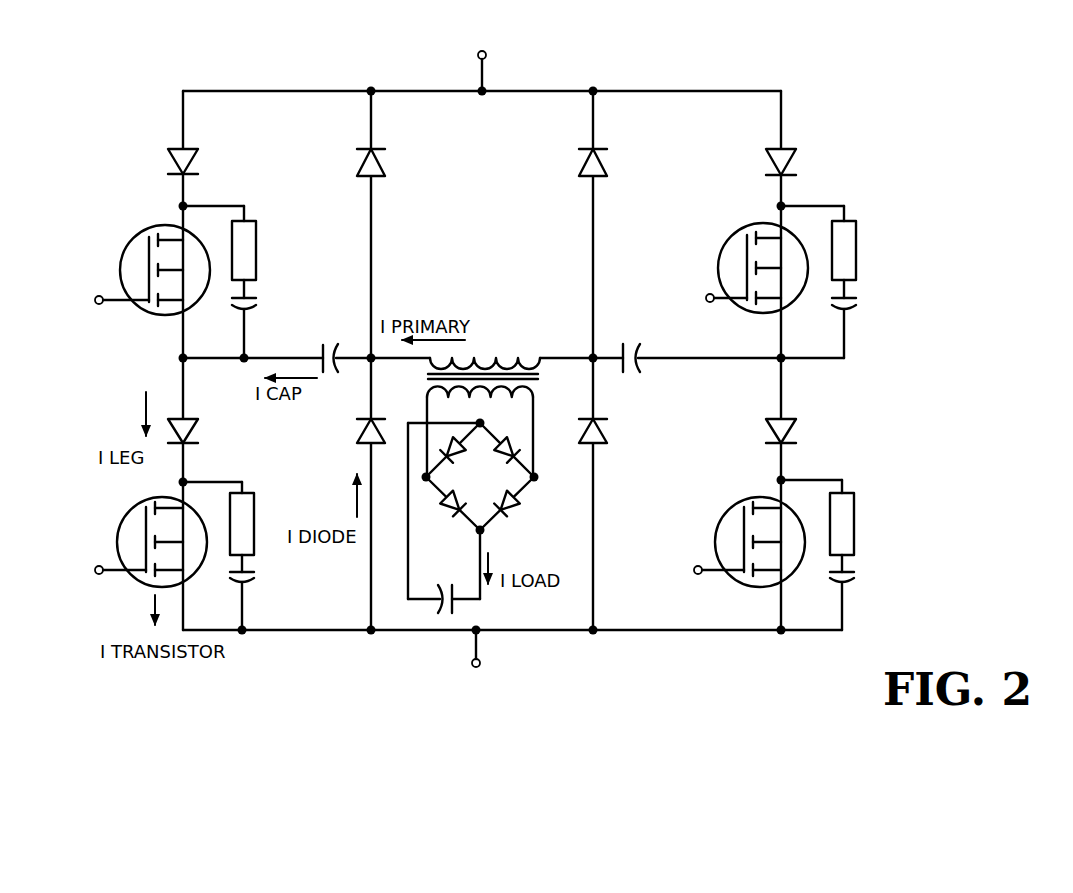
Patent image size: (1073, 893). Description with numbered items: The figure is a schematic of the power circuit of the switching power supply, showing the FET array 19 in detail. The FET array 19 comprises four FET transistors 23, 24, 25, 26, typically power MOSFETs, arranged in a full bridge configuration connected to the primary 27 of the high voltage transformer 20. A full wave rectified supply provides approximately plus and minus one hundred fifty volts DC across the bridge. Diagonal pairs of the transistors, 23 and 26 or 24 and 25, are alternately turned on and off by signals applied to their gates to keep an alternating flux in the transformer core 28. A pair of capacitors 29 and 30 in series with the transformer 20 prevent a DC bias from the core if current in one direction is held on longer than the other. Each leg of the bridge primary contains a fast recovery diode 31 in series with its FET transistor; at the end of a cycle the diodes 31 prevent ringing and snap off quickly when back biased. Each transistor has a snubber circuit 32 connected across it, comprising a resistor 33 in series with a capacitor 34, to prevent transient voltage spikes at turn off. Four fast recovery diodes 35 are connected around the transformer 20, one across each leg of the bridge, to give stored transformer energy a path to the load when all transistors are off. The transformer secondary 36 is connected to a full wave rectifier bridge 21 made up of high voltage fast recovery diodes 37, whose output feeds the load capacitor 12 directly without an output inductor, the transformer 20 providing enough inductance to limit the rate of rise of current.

The FET array 19 is at (732, 45).
The capacitor 12 is at (455, 604).
The high voltage transformer 20 is at (480, 368).
The high voltage rectifier bridge 21 is at (503, 492).
The FET transistor 23 is at (127, 242).
The FET transistor 24 is at (125, 516).
The FET transistor 25 is at (727, 245).
The FET transistor 26 is at (727, 511).
The primary 27 is at (523, 357).
The transformer core 28 is at (536, 392).
The capacitor 29 is at (320, 353).
The capacitor 30 is at (638, 352).
The fast recovery rectifier or diode 31 is at (186, 152).
The snubber circuit 32 is at (259, 270).
The resistor 33 is at (248, 228).
The capacitor 34 is at (258, 301).
The fast recovery rectifier or diode 35 is at (381, 166).
The transformer secondary 36 is at (425, 393).
The high voltage, fast recovery diode 37 is at (456, 456).